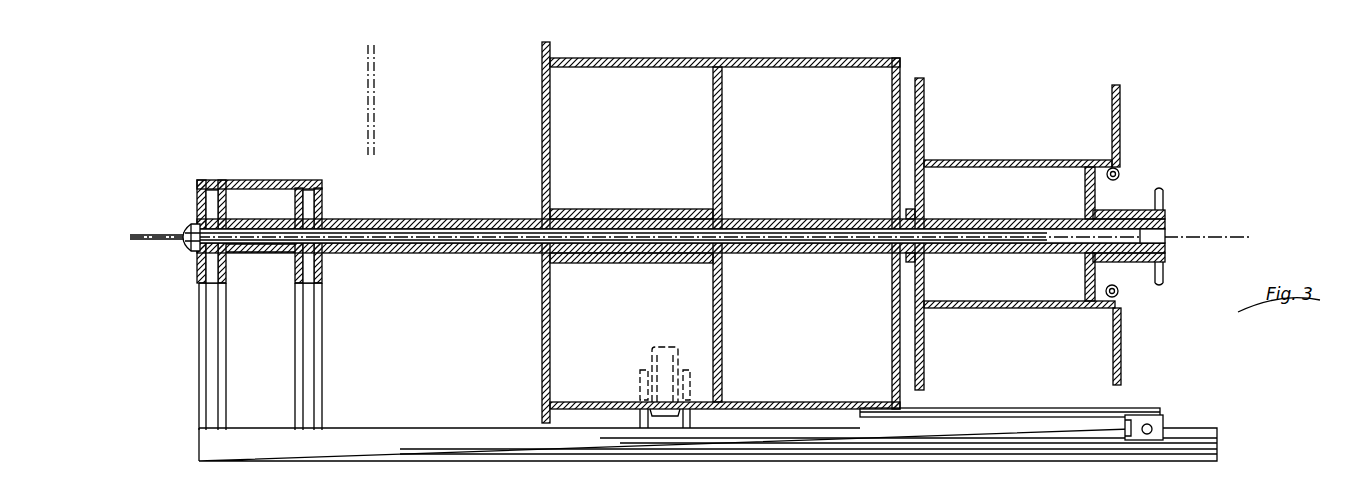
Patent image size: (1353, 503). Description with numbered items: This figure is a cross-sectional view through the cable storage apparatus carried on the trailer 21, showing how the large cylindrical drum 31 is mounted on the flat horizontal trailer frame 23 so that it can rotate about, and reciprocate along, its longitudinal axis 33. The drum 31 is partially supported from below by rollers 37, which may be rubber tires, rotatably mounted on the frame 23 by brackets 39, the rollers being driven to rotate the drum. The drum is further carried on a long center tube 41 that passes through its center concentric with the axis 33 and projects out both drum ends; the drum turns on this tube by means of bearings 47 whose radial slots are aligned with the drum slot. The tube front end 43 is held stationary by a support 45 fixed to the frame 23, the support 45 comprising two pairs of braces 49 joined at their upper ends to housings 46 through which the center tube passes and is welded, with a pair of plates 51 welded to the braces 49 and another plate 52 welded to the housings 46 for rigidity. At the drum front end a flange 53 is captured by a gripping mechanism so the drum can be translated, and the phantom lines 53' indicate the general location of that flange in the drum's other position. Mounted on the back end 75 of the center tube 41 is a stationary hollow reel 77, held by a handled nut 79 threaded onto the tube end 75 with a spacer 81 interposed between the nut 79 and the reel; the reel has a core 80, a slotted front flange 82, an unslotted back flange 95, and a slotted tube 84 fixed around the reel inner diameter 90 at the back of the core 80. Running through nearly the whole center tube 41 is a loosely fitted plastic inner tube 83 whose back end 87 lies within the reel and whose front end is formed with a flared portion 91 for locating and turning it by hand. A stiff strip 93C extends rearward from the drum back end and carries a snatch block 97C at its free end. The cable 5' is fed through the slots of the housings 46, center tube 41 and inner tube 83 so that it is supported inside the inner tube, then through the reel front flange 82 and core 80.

The trailer 21 is at (800, 465).
The trailer frame 23 is at (415, 440).
The drum 31 is at (818, 62).
The longitudinal axis 33 is at (1216, 236).
The rollers 37 is at (668, 346).
The brackets 39 is at (640, 370).
The center tube 41 is at (434, 220).
The tube front end 43 is at (270, 256).
The support 45 is at (323, 337).
The housings 46 is at (321, 204).
The bearings 47 is at (546, 213).
The braces 49 is at (198, 372).
The plates 51 is at (283, 193).
The plate 52 is at (243, 181).
The flange 53 is at (579, 228).
The phantom-line flange position 53' is at (404, 100).
The cable 5' is at (651, 217).
The back end of the center tube 75 is at (965, 217).
The reel 77 is at (1128, 355).
The handled nut 79 is at (1168, 260).
The reel core 80 is at (1033, 160).
The spacer 81 is at (1132, 215).
The front flange 82 is at (926, 101).
The inner tube 83 is at (1064, 217).
The slotted tube 84 is at (1120, 170).
The back end of the inner tube 87 is at (1052, 254).
The reel inner diameter 90 is at (985, 300).
The flared portion 91 is at (192, 225).
The strip 93C is at (1000, 406).
The back flange 95 is at (1122, 93).
The snatch block 97C is at (1165, 425).